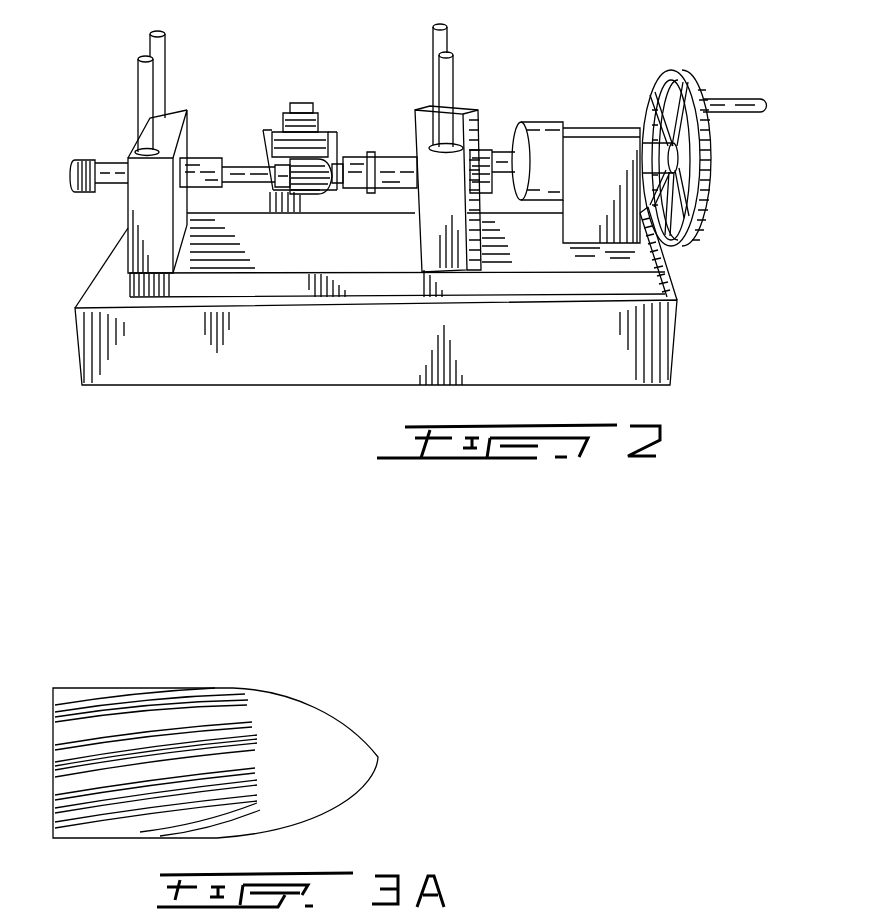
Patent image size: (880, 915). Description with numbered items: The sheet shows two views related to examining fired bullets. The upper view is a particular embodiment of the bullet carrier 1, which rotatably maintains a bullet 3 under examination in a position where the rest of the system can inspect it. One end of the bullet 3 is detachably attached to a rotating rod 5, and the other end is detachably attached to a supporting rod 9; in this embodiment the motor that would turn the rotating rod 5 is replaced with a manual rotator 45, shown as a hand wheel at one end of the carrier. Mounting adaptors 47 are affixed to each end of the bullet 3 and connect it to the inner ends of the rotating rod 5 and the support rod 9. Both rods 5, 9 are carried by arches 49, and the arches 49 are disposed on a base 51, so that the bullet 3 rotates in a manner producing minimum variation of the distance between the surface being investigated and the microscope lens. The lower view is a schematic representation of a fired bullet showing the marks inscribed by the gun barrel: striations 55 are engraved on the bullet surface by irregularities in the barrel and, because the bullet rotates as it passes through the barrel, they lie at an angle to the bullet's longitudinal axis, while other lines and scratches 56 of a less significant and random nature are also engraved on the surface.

In FIG. 2, the bullet carrier 1 is at (692, 321).
In FIG. 2, the bullet 3 is at (300, 213).
In FIG. 2, the rotating rod 5 is at (390, 160).
In FIG. 2, the supporting rod 9 is at (247, 167).
In FIG. 2, the manual rotator 45 is at (688, 72).
In FIG. 2, the mounting adaptors 47 is at (273, 162).
In FIG. 2, the arches 49 is at (138, 200).
In FIG. 2, the base 51 is at (660, 277).
In FIG. 3A, the striations 55 is at (183, 740).
In FIG. 3A, the lines and scratches 56 is at (323, 713).